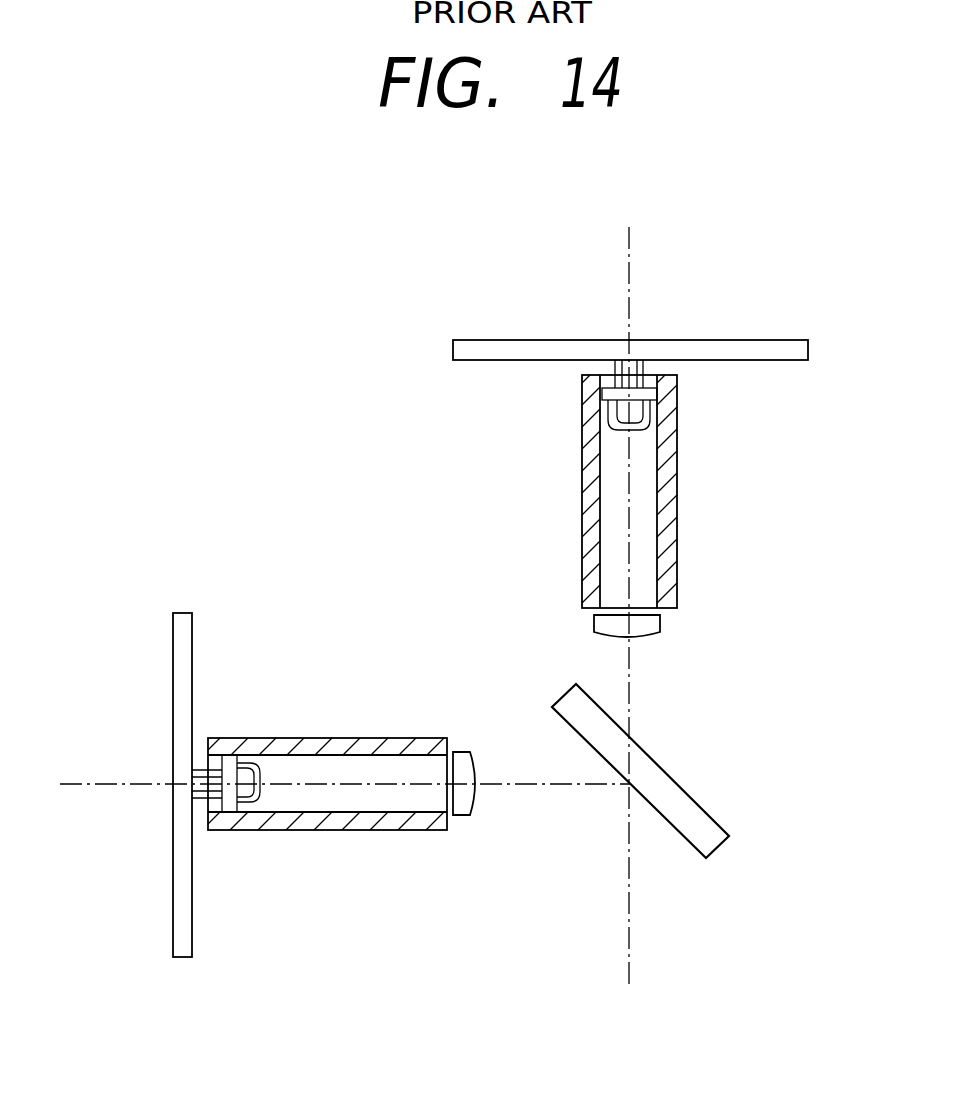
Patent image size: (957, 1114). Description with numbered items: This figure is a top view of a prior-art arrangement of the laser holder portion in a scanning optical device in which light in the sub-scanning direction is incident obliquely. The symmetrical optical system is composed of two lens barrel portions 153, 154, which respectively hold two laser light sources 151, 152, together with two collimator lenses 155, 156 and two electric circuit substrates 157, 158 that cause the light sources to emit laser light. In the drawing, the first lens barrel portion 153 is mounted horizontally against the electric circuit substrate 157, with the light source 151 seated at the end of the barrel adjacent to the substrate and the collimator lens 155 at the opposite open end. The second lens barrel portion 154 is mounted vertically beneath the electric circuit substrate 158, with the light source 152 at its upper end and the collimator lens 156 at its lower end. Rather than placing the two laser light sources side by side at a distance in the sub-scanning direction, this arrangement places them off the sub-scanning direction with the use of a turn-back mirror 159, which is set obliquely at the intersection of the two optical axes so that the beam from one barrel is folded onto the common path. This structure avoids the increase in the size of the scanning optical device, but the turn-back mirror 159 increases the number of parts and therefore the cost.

The light source 151 is at (264, 740).
The light source 152 is at (657, 427).
The lens barrel portion 153 is at (338, 820).
The lens barrel portion 154 is at (597, 515).
The collimator lens 155 is at (477, 807).
The collimator lens 156 is at (647, 626).
The electric circuit substrate 157 is at (172, 700).
The electric circuit substrate 158 is at (755, 348).
The turn-back mirror 159 is at (697, 824).